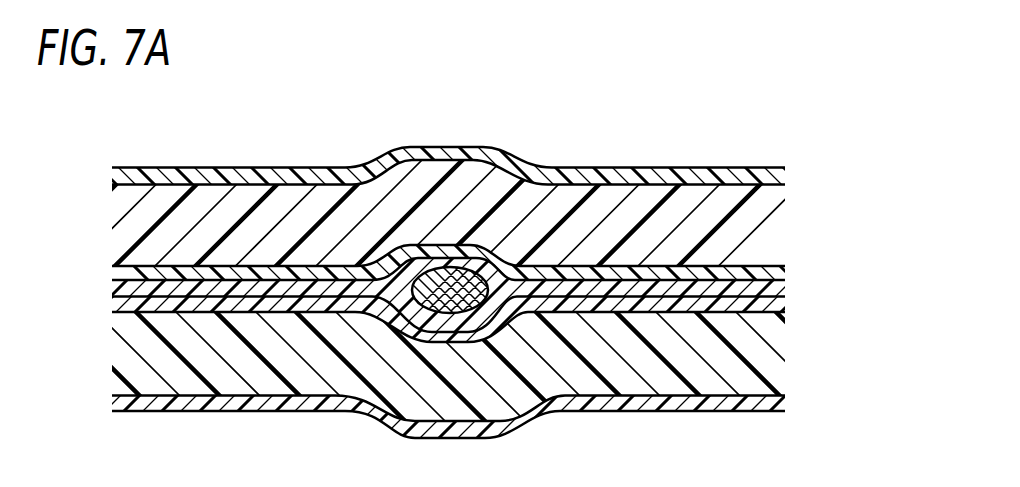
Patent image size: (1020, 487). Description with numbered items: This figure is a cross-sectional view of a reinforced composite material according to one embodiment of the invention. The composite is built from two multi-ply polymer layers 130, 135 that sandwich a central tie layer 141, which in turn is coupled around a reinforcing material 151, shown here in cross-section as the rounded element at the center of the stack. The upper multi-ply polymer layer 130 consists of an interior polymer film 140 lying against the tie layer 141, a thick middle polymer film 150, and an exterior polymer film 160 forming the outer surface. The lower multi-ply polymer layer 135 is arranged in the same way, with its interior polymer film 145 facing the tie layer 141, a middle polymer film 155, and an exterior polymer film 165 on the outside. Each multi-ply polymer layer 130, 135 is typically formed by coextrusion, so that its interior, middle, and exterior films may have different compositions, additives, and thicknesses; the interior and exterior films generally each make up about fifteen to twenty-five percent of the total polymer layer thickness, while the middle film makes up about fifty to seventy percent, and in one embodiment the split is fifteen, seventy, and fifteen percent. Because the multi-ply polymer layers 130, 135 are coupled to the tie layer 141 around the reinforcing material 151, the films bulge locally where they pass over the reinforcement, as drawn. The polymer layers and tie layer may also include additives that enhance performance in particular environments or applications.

The multi-ply polymer layer 130 is at (510, 243).
The multi-ply polymer layer 135 is at (510, 243).
The interior polymer film 140 is at (113, 273).
The tie layer 141 is at (786, 292).
The interior polymer film 145 is at (510, 243).
The middle polymer film 150 is at (196, 239).
The reinforcing material 151 is at (440, 287).
The middle polymer film 155 is at (196, 369).
The exterior polymer film 160 is at (113, 175).
The exterior polymer film 165 is at (113, 402).